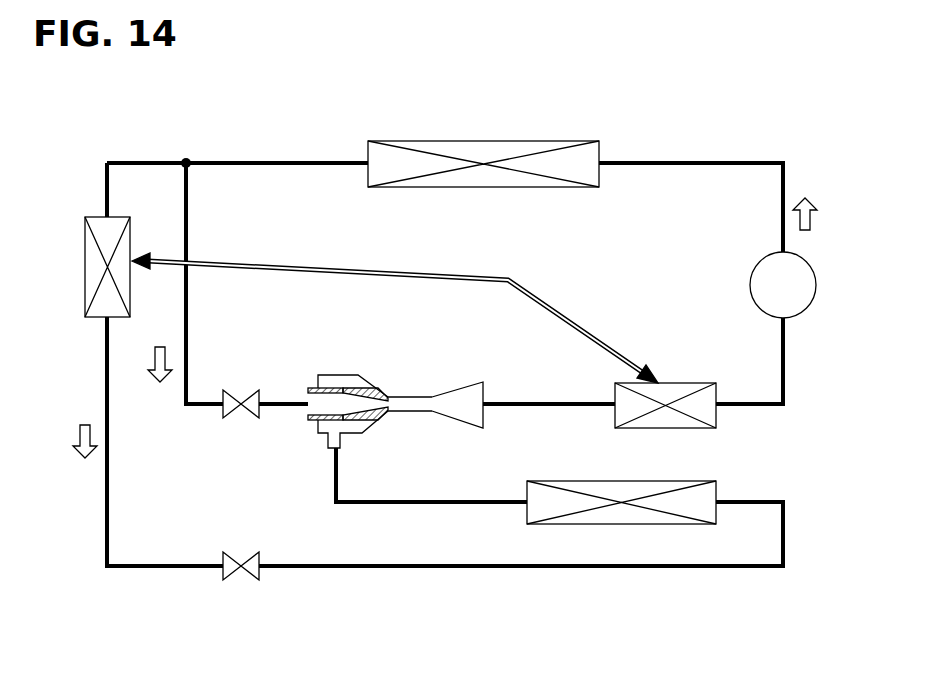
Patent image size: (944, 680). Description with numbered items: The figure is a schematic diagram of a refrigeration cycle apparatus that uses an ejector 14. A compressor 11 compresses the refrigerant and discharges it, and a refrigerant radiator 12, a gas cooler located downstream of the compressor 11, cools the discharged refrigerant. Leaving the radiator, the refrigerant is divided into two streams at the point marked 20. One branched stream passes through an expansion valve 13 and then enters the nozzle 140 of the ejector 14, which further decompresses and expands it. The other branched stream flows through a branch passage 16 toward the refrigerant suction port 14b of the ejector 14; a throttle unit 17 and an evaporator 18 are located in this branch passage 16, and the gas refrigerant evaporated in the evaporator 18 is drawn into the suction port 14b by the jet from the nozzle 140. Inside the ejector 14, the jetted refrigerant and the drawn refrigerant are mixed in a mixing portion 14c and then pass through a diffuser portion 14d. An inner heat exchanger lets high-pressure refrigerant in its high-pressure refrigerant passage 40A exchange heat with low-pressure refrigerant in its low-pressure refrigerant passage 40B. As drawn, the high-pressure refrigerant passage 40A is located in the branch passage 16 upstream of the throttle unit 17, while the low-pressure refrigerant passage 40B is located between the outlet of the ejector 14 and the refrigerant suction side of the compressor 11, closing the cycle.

The compressor 11 is at (816, 278).
The refrigerant radiator 12 is at (483, 141).
The expansion valve 13 is at (241, 419).
The ejector 14 is at (415, 396).
The nozzle 140 is at (355, 392).
The refrigerant suction port 14b is at (343, 440).
The mixing portion 14c is at (405, 408).
The diffuser portion 14d is at (470, 420).
The branch passage 16 is at (107, 512).
The throttle unit 17 is at (235, 570).
The evaporator 18 is at (716, 492).
The branch portion 20 is at (275, 162).
The high-pressure refrigerant passage 40A is at (85, 270).
The low-pressure refrigerant passage 40B is at (716, 418).